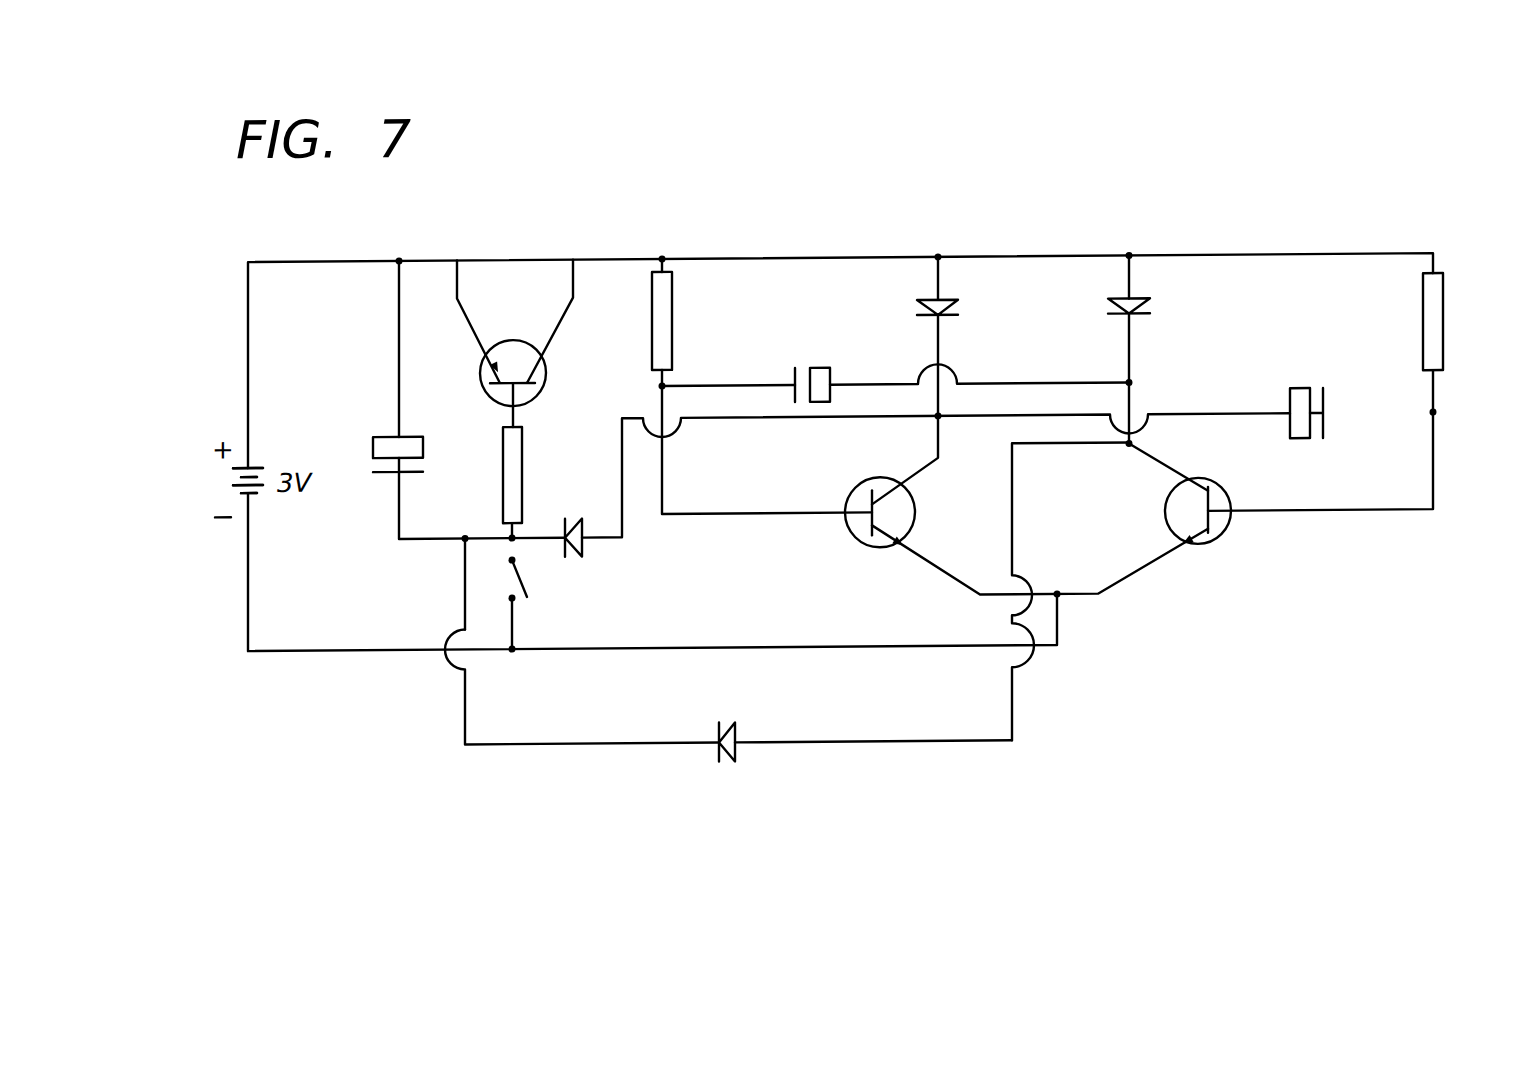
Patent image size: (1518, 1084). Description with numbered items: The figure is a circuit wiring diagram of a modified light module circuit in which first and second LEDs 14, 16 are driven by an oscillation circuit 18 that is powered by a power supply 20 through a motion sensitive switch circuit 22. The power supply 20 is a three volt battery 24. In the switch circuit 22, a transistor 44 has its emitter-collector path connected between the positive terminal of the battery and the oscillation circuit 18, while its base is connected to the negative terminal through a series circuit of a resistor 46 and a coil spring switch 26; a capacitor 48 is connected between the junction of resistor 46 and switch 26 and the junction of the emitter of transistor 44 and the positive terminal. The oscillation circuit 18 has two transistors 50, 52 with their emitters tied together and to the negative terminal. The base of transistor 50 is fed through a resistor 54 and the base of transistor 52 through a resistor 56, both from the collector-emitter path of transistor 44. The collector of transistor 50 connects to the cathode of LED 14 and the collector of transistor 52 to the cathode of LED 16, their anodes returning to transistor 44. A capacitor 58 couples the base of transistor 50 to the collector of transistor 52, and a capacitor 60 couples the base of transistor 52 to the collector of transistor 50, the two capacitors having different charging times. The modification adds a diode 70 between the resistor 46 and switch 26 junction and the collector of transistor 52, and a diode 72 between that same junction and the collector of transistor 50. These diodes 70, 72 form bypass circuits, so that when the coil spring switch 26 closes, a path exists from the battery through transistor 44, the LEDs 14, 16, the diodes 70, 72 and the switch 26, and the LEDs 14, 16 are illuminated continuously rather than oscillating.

The first LED 14 is at (1132, 307).
The second LED 16 is at (950, 307).
The oscillation circuit 18 is at (1080, 653).
The power supply 20 is at (238, 530).
The motion sensitive switch circuit 22 is at (413, 595).
The three volt battery 24 is at (258, 472).
The coil spring switch 26 is at (527, 589).
The transistor 44 is at (515, 342).
The resistor 46 is at (523, 474).
The capacitor 48 is at (423, 450).
The transistor 50 is at (1200, 551).
The transistor 52 is at (867, 555).
The resistor 54 is at (1443, 344).
The resistor 56 is at (672, 327).
The capacitor 58 is at (1300, 448).
The capacitor 60 is at (830, 379).
The diode 70 is at (582, 552).
The diode 72 is at (735, 766).